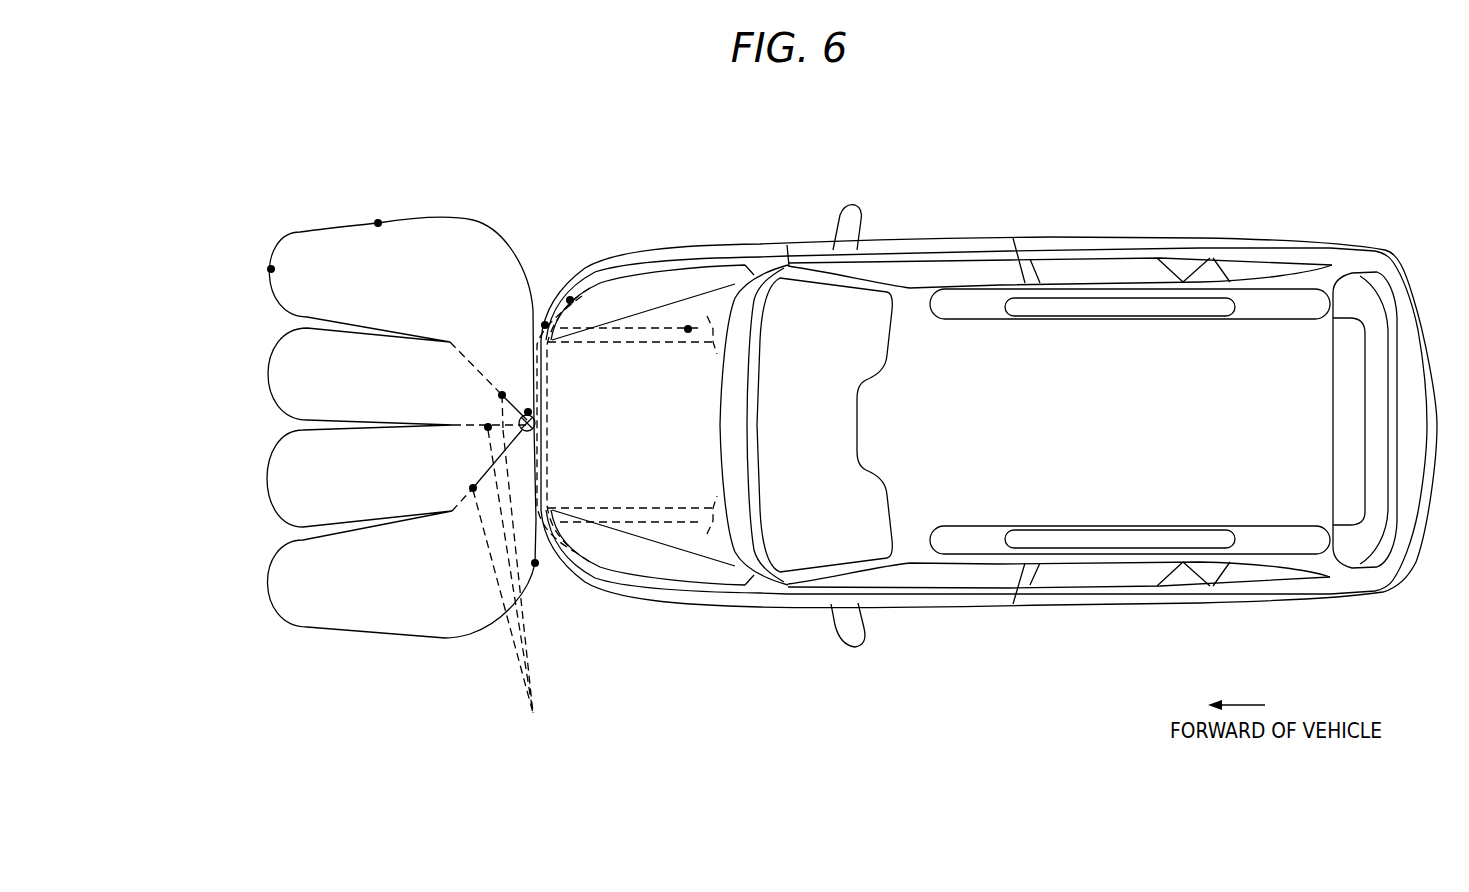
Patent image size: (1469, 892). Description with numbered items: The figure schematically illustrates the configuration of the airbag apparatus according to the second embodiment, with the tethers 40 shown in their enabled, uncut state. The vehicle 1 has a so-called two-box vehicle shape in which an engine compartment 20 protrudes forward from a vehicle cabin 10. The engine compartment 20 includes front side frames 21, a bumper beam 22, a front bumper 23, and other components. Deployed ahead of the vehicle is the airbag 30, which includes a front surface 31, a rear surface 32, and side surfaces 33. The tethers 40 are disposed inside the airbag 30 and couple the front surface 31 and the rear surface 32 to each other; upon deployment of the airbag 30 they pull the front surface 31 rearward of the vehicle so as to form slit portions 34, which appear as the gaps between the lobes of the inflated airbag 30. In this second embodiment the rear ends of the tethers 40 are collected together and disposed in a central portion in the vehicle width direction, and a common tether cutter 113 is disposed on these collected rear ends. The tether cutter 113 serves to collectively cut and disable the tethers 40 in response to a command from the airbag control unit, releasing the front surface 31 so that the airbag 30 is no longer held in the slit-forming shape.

The vehicle 1 is at (1364, 213).
The vehicle cabin 10 is at (1095, 214).
The engine compartment 20 is at (673, 220).
The front side frames 21 is at (688, 329).
The bumper beam 22 is at (570, 300).
The front bumper 23 is at (545, 325).
The airbag 30 is at (237, 193).
The front surface 31 is at (271, 269).
The rear surface 32 is at (535, 563).
The side surfaces 33 is at (378, 223).
The slit portions 34 is at (283, 521).
The tethers 40 is at (508, 568).
The tether cutter 113 is at (528, 412).